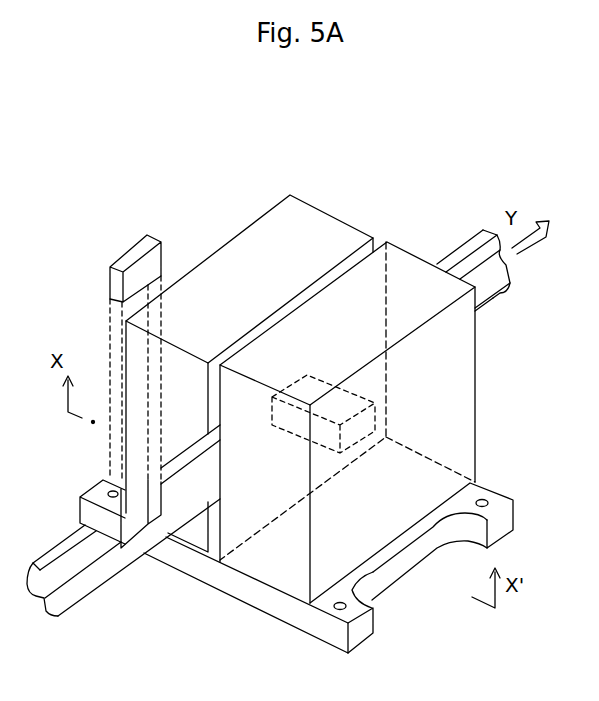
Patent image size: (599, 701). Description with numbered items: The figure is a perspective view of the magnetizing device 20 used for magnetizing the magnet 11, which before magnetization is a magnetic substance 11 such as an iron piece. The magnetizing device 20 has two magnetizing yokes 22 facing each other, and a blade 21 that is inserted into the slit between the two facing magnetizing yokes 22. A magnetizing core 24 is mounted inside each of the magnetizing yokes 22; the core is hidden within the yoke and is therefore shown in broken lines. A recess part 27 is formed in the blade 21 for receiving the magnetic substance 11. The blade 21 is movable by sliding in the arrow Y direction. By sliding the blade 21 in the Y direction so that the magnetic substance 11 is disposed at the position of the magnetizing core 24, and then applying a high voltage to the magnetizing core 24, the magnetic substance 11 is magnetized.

The magnet 11 is at (133, 247).
The magnetizing device 20 is at (266, 181).
The blade 21 is at (80, 588).
The magnetizing yoke 22 is at (340, 222).
The magnetizing core 24 is at (376, 418).
The recess part 27 is at (143, 532).